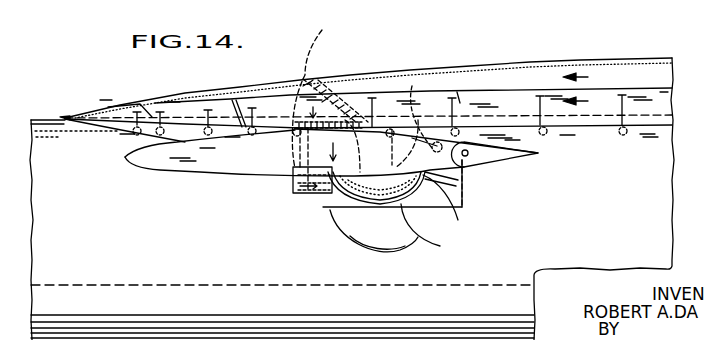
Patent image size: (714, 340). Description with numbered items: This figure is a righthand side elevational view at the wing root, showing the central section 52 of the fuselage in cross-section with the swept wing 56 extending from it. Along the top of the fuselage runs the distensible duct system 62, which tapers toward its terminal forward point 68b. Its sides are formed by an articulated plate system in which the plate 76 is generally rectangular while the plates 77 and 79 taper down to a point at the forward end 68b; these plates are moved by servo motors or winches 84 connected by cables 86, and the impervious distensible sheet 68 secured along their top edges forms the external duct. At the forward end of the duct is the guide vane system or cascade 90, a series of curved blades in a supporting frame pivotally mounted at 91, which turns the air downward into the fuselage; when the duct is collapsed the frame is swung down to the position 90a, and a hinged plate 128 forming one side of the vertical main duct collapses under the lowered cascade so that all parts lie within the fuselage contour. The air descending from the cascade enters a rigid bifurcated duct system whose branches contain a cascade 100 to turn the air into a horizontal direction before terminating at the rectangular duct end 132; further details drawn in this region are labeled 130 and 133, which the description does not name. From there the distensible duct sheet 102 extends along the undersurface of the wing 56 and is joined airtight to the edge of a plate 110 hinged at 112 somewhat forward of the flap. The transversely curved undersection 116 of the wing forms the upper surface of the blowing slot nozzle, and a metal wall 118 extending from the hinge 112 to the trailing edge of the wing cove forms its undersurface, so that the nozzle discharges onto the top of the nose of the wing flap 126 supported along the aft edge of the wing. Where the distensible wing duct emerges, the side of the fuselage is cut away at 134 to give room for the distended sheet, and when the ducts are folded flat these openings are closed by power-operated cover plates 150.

The central section of the fuselage 52 is at (92, 227).
The swept wing 56 is at (152, 162).
The distensible duct system 62 is at (549, 58).
The impervious distensible sheet 68 is at (449, 67).
The forward point of the duct system 68b is at (62, 115).
The articulated plate 76 is at (667, 100).
The articulated plate 77 is at (196, 106).
The articulated plate 79 is at (113, 118).
The servo motors or winches 84 is at (545, 136).
The cables 86 is at (210, 112).
The guide vane system or cascade 90 is at (320, 80).
The retracted position of the cascade 90a is at (305, 140).
The pivot of the cascade 91 is at (358, 129).
The cascade 100 is at (306, 190).
The distensible duct sheet 102 is at (430, 235).
The plate 110 is at (457, 184).
The hinge 112 is at (482, 164).
The transversely curved undersection of the wing 116 is at (407, 90).
The metal wall 118 is at (457, 92).
The wing flap 126 is at (493, 150).
The plate forming one side of the vertical main duct 128 is at (287, 128).
The retracted duct position 130 is at (355, 101).
The rigid duct end 132 is at (336, 208).
The fairing door 133 is at (344, 225).
The cut-away opening in the fuselage side 134 is at (455, 208).
The cover plates 150 is at (390, 238).